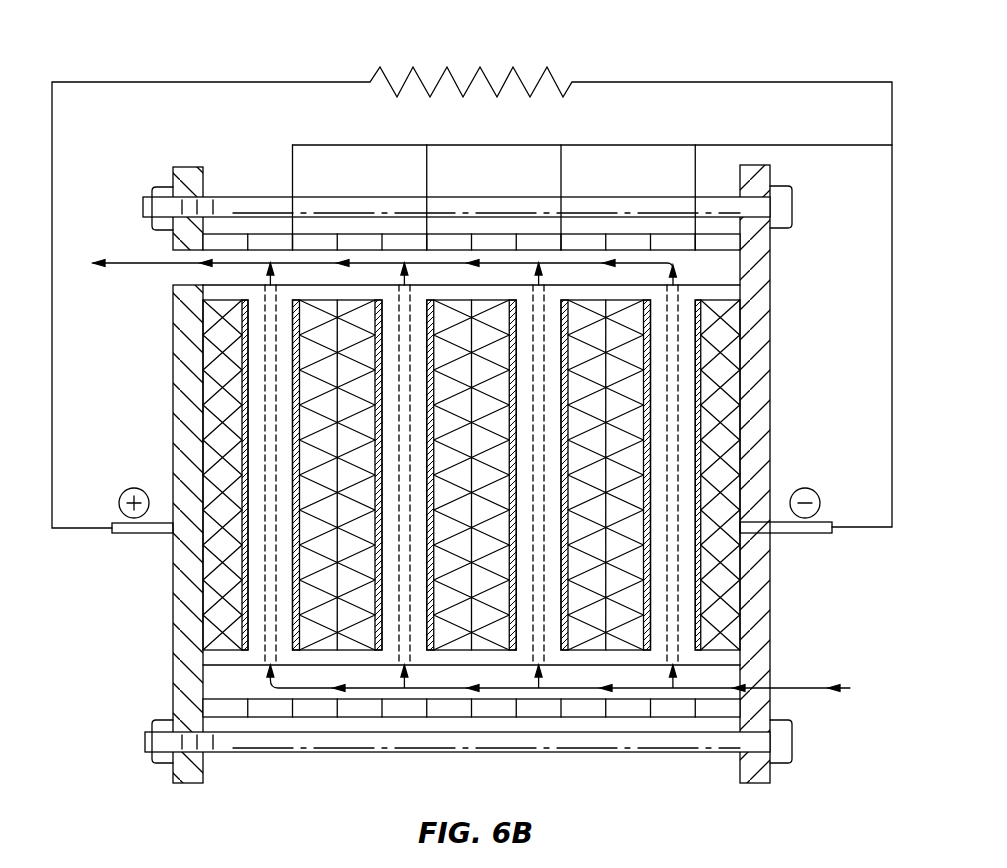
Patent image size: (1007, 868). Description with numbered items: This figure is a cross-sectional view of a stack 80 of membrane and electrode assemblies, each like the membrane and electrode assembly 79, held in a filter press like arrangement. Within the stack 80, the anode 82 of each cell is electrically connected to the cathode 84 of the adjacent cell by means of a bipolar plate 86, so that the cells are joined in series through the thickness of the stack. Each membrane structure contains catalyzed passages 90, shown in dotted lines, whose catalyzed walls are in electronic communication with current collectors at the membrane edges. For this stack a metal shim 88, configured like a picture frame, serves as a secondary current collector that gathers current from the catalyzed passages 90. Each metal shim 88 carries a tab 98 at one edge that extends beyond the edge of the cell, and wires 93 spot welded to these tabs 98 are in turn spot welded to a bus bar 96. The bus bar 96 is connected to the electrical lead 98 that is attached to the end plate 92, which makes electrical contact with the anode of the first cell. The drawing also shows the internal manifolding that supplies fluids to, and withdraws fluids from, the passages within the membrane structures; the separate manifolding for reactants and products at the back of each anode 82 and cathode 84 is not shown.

The membrane and electrode assembly 79 is at (682, 673).
The stack 80 is at (139, 66).
The anode 82 is at (733, 608).
The cathode 84 is at (243, 610).
The bipolar plate 86 is at (313, 620).
The metal shim 88 is at (292, 243).
The catalyzed passages 90 is at (270, 360).
The end plate 92 is at (762, 590).
The wires 93 is at (293, 238).
The bus bar 96 is at (355, 145).
The tab 98 is at (290, 82).